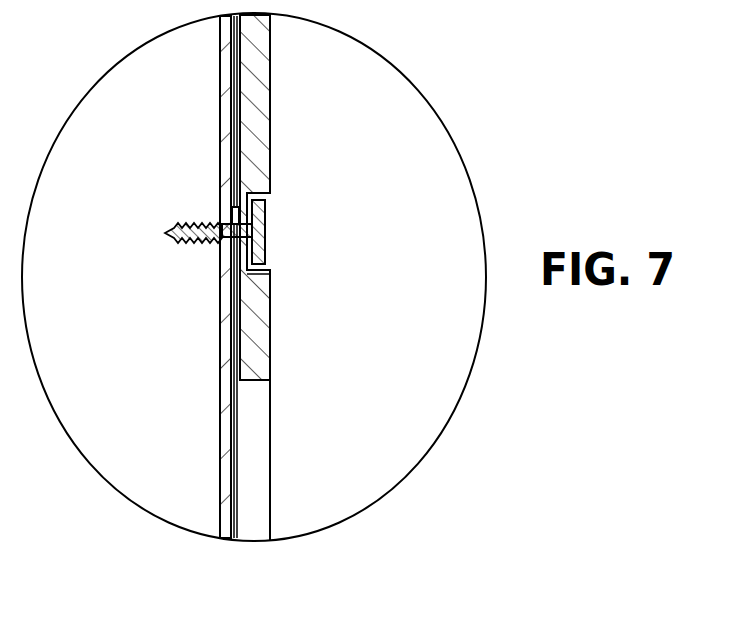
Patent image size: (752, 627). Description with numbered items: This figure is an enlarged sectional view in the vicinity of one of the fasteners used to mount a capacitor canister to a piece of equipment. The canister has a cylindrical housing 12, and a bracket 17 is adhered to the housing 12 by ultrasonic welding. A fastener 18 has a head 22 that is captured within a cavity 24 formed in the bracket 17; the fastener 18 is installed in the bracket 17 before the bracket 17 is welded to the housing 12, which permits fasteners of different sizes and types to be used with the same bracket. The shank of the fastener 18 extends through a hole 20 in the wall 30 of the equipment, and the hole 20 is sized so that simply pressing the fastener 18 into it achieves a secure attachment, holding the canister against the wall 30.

The cylindrical housing 12 is at (372, 403).
The bracket 17 is at (262, 112).
The fastener 18 is at (180, 228).
The hole 20 is at (232, 222).
The head 22 is at (262, 226).
The cavity 24 is at (267, 200).
The wall 30 is at (227, 88).